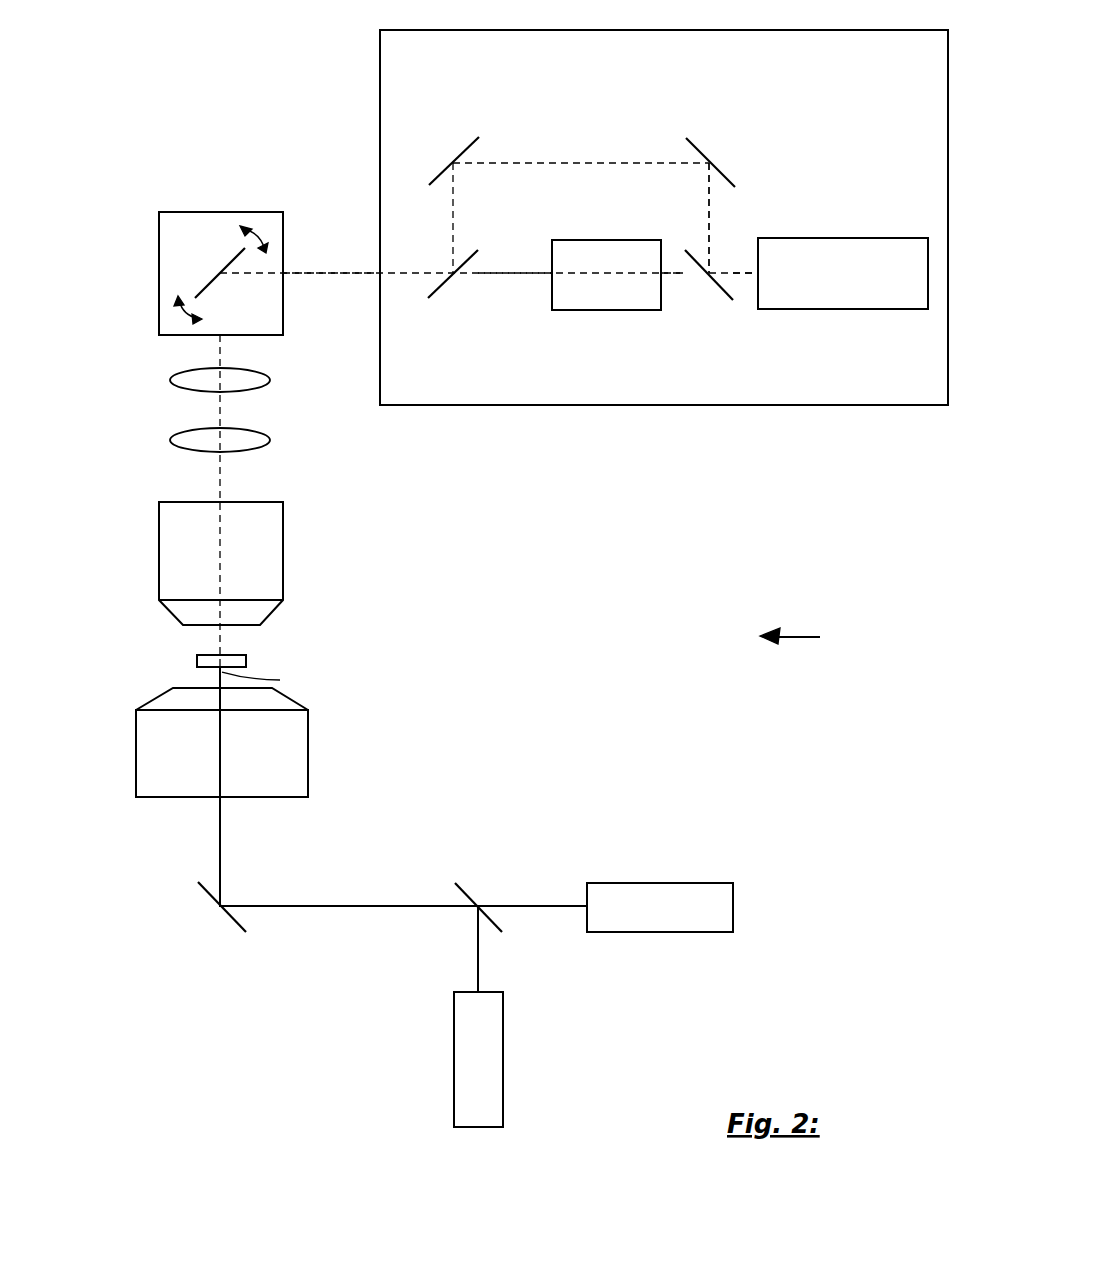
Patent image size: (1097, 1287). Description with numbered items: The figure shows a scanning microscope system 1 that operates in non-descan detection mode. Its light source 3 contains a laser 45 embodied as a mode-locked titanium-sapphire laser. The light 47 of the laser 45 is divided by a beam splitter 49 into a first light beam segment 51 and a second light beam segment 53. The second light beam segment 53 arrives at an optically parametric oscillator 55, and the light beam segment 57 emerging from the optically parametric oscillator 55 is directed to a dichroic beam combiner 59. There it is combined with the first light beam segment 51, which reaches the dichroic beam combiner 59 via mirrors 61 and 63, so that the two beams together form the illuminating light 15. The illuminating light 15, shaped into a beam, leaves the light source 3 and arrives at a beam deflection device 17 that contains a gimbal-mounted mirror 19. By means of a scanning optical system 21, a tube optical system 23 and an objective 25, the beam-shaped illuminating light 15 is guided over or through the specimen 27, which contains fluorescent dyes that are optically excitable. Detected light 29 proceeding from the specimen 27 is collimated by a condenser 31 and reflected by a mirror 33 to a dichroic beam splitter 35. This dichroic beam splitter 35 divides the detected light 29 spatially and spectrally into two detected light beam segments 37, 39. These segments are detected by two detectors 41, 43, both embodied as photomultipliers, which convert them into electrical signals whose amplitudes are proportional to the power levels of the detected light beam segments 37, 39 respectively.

The scanning microscope system 1 is at (804, 644).
The light source 3 is at (390, 75).
The illuminating light 15 is at (340, 273).
The beam deflection device 17 is at (185, 235).
The gimbal-mounted mirror 19 is at (208, 280).
The scanning optical system 21 is at (245, 383).
The tube optical system 23 is at (245, 443).
The objective 25 is at (183, 530).
The specimen 27 is at (208, 658).
The detected light 29 is at (280, 680).
The condenser 31 is at (295, 747).
The mirror 33 is at (210, 897).
The dichroic beam splitter 35 is at (467, 892).
The detected light beam segment 37 is at (525, 907).
The detected light beam segment 39 is at (478, 943).
The detector 41 is at (648, 895).
The detector 43 is at (490, 1030).
The laser 45 is at (807, 293).
The light 47 is at (733, 273).
The beam splitter 49 is at (722, 288).
The first light beam segment 51 is at (707, 217).
The second light beam segment 53 is at (678, 277).
The optically parametric oscillator 55 is at (600, 282).
The light beam segment 57 is at (500, 275).
The dichroic beam combiner 59 is at (437, 292).
The mirror 61 is at (700, 147).
The mirror 63 is at (465, 141).